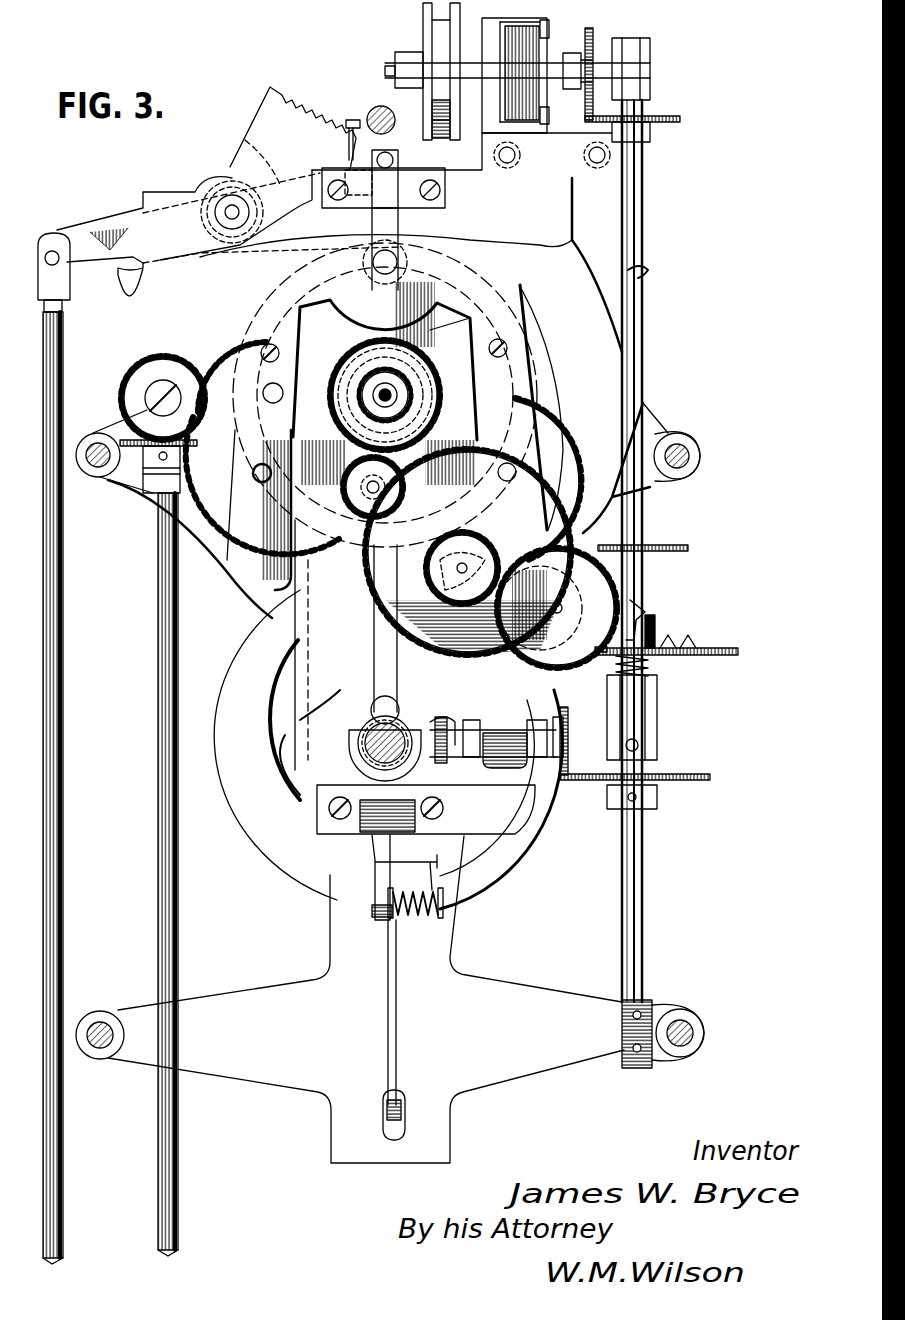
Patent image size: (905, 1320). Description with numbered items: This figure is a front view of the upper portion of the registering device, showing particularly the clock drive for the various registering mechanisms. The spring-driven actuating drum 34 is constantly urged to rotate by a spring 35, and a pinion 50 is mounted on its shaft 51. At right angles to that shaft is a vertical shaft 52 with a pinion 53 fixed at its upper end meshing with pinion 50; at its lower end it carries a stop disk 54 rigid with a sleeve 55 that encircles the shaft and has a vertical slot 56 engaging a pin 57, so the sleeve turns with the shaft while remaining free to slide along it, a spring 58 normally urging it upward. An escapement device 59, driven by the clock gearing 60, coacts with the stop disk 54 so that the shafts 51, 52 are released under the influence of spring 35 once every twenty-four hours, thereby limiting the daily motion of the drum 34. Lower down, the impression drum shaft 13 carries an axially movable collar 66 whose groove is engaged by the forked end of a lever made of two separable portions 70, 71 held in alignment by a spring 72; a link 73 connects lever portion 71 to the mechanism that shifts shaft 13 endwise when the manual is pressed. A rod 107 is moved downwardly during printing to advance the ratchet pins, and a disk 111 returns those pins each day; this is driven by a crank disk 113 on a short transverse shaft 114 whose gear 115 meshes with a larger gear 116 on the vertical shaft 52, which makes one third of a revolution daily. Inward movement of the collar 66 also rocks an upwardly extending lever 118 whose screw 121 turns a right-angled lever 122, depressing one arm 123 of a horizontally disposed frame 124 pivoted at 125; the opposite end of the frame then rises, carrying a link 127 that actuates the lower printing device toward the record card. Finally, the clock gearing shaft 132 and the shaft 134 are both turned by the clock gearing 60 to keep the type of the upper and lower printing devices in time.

The impression drum shaft 13 is at (392, 740).
The spring-driven actuating drum 34 is at (437, 38).
The spring 35 is at (519, 48).
The pinion 50 is at (592, 35).
The shaft 51 is at (553, 62).
The vertical shaft 52 is at (632, 230).
The pinion 53 is at (658, 118).
The stop disk 54 is at (712, 652).
The sleeve 55 is at (655, 628).
The vertical slot 56 is at (640, 612).
The pin 57 is at (657, 648).
The spring 58 is at (650, 670).
The escapement device 59 is at (617, 717).
The clock gearing 60 is at (403, 570).
The collar 66 is at (366, 725).
The lever portion 70 is at (380, 870).
The lever portion 71 is at (395, 1023).
The spring 72 is at (427, 925).
The link 73 is at (385, 1112).
The rod 107 is at (295, 650).
The disk 111 is at (493, 862).
The crank disk 113 is at (450, 768).
The short transverse shaft 114 is at (493, 740).
The gear 115 is at (567, 742).
The gear 116 is at (592, 778).
The lever 118 is at (383, 625).
The screw 121 is at (410, 262).
The right-angled lever 122 is at (390, 228).
The arm 123 is at (245, 140).
The horizontally disposed frame 124 is at (122, 222).
The pivot 125 is at (232, 212).
The link 127 is at (63, 353).
The clock gearing shaft 132 is at (388, 395).
The shaft 134 is at (170, 945).